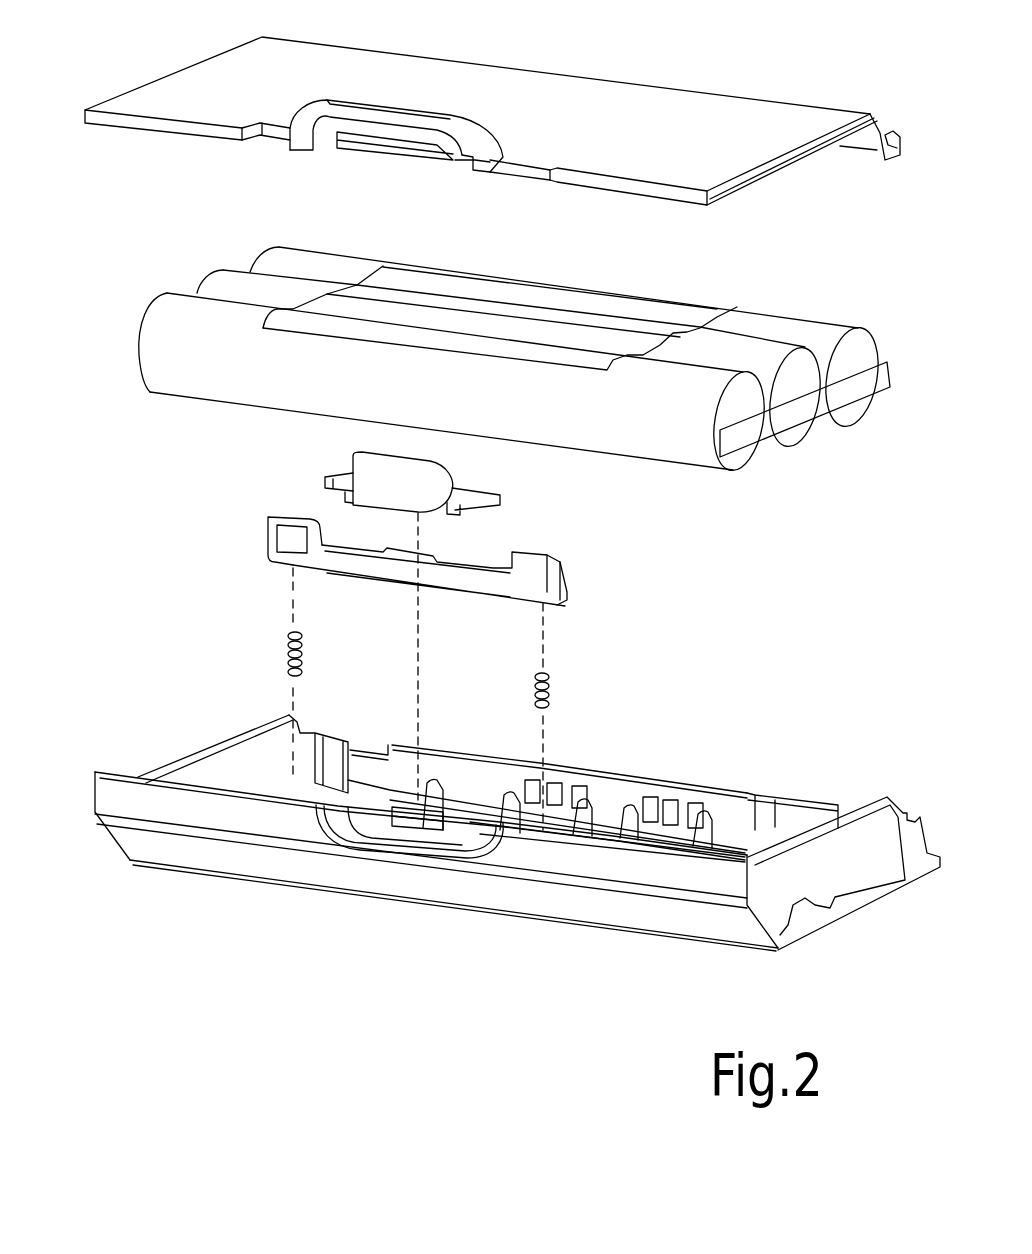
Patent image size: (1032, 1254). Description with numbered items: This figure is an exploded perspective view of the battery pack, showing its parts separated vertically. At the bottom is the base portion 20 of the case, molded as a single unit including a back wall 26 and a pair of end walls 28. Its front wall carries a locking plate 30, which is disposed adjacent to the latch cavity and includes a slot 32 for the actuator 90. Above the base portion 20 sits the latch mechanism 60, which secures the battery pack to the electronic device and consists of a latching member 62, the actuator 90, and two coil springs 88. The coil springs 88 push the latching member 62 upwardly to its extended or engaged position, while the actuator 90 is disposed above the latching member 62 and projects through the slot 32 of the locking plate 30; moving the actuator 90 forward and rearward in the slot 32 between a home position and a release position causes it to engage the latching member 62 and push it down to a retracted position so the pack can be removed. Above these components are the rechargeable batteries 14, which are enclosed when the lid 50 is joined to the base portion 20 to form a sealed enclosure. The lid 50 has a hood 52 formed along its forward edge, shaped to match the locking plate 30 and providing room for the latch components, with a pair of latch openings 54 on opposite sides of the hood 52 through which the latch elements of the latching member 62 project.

The rechargeable batteries 14 is at (808, 312).
The base portion 20 is at (740, 776).
The back wall 26 is at (740, 812).
The end walls 28 is at (185, 758).
The locking plate 30 is at (362, 832).
The slot 32 is at (412, 830).
The lid 50 is at (680, 105).
The hood 52 is at (415, 105).
The latch openings 54 is at (272, 133).
The latch mechanism 60 is at (196, 584).
The latching member 62 is at (590, 588).
The coil springs 88 is at (286, 657).
The actuator 90 is at (524, 499).